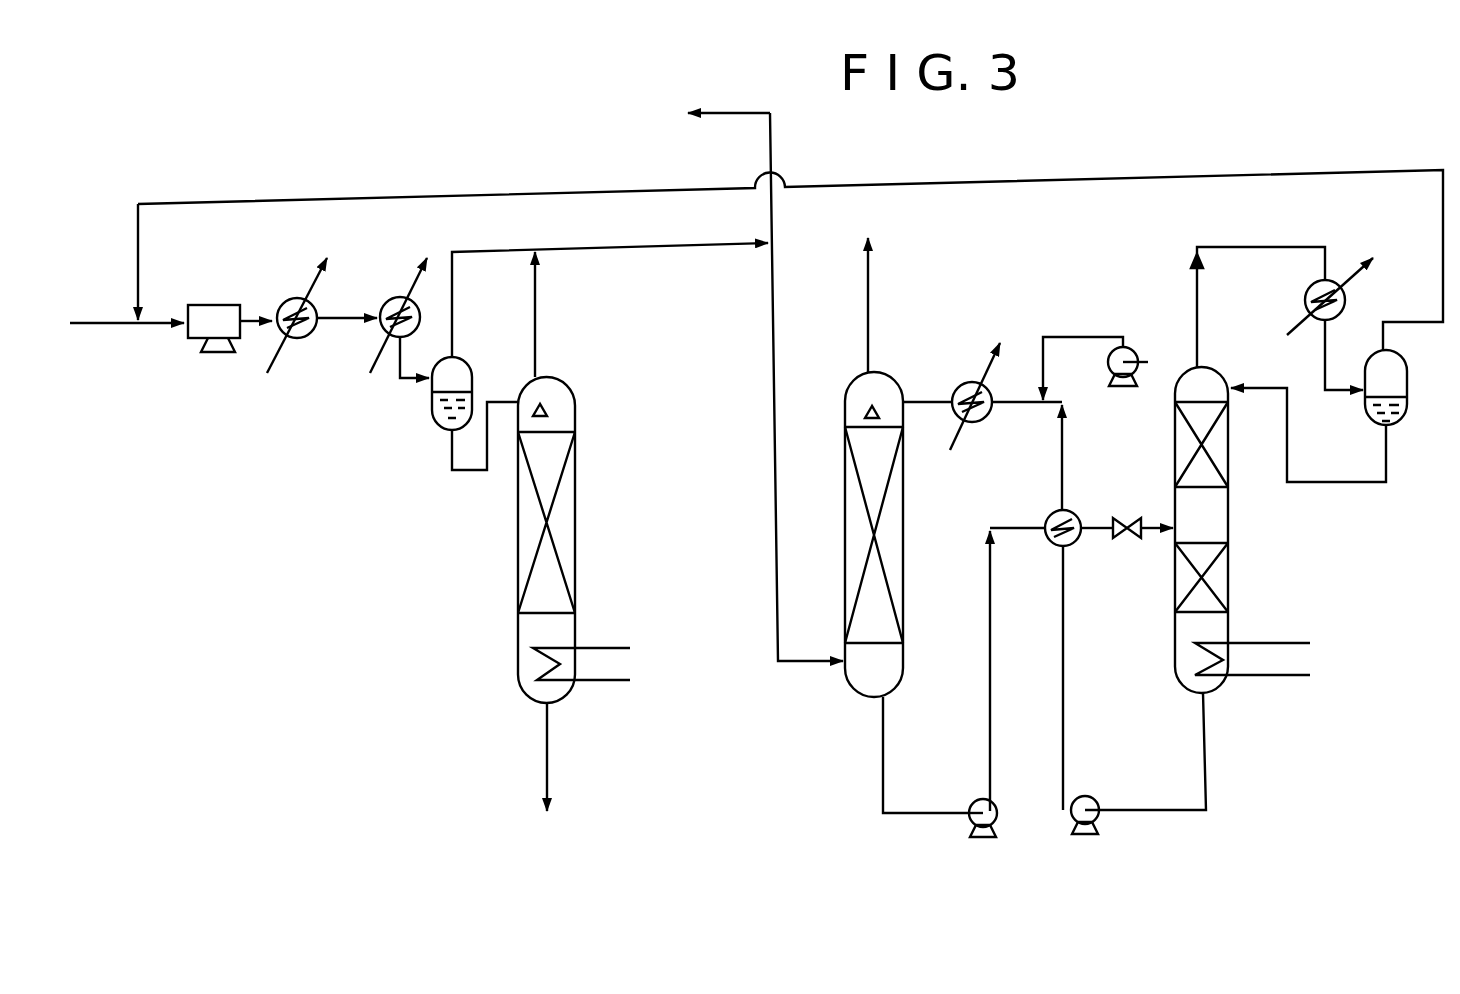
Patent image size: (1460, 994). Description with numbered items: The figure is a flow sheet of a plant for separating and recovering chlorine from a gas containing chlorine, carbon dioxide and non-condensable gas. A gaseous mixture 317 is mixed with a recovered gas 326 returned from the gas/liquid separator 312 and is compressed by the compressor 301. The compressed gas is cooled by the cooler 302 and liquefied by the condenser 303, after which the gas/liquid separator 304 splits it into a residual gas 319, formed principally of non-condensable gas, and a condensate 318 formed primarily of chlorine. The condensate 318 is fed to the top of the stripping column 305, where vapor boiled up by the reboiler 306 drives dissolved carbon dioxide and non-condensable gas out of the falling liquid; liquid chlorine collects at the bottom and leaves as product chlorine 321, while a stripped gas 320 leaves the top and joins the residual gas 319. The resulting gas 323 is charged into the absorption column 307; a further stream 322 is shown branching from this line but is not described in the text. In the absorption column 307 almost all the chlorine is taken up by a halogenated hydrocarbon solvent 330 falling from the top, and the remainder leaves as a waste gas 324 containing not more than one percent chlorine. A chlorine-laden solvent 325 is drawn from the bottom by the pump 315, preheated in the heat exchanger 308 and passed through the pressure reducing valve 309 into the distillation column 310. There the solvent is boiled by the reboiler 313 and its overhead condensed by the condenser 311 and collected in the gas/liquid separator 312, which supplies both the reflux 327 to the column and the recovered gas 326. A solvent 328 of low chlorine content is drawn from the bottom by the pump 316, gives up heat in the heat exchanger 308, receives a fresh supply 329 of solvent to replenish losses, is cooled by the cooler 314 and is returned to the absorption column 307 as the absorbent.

The compressor 301 is at (204, 330).
The cooler 302 is at (308, 340).
The condenser 303 is at (394, 296).
The gas/liquid separator 304 is at (413, 409).
The stripping column 305 is at (575, 525).
The reboiler 306 is at (603, 682).
The absorption column 307 is at (905, 523).
The heat exchanger 308 is at (1078, 542).
The pressure reducing valve 309 is at (1128, 517).
The distillation column 310 is at (1230, 530).
The condenser 311 is at (1305, 298).
The gas/liquid separator 312 is at (1407, 400).
The reboiler 313 is at (1290, 678).
The cooler 314 is at (990, 422).
The pump 315 is at (975, 828).
The pump 316 is at (1090, 795).
The gaseous mixture 317 is at (107, 325).
The condensate 318 is at (465, 472).
The residual gas 319 is at (610, 290).
The stripped gas 320 is at (560, 314).
The product chlorine 321 is at (547, 762).
The purge line 322 is at (704, 118).
The gas 323 is at (772, 390).
The waste gas 324 is at (910, 305).
The solvent 325 is at (883, 768).
The recovered gas 326 is at (790, 248).
The reflux 327 is at (1308, 436).
The solvent 328 is at (1206, 758).
The fresh supply of solvent 329 is at (1125, 345).
The solvent 330 is at (920, 402).